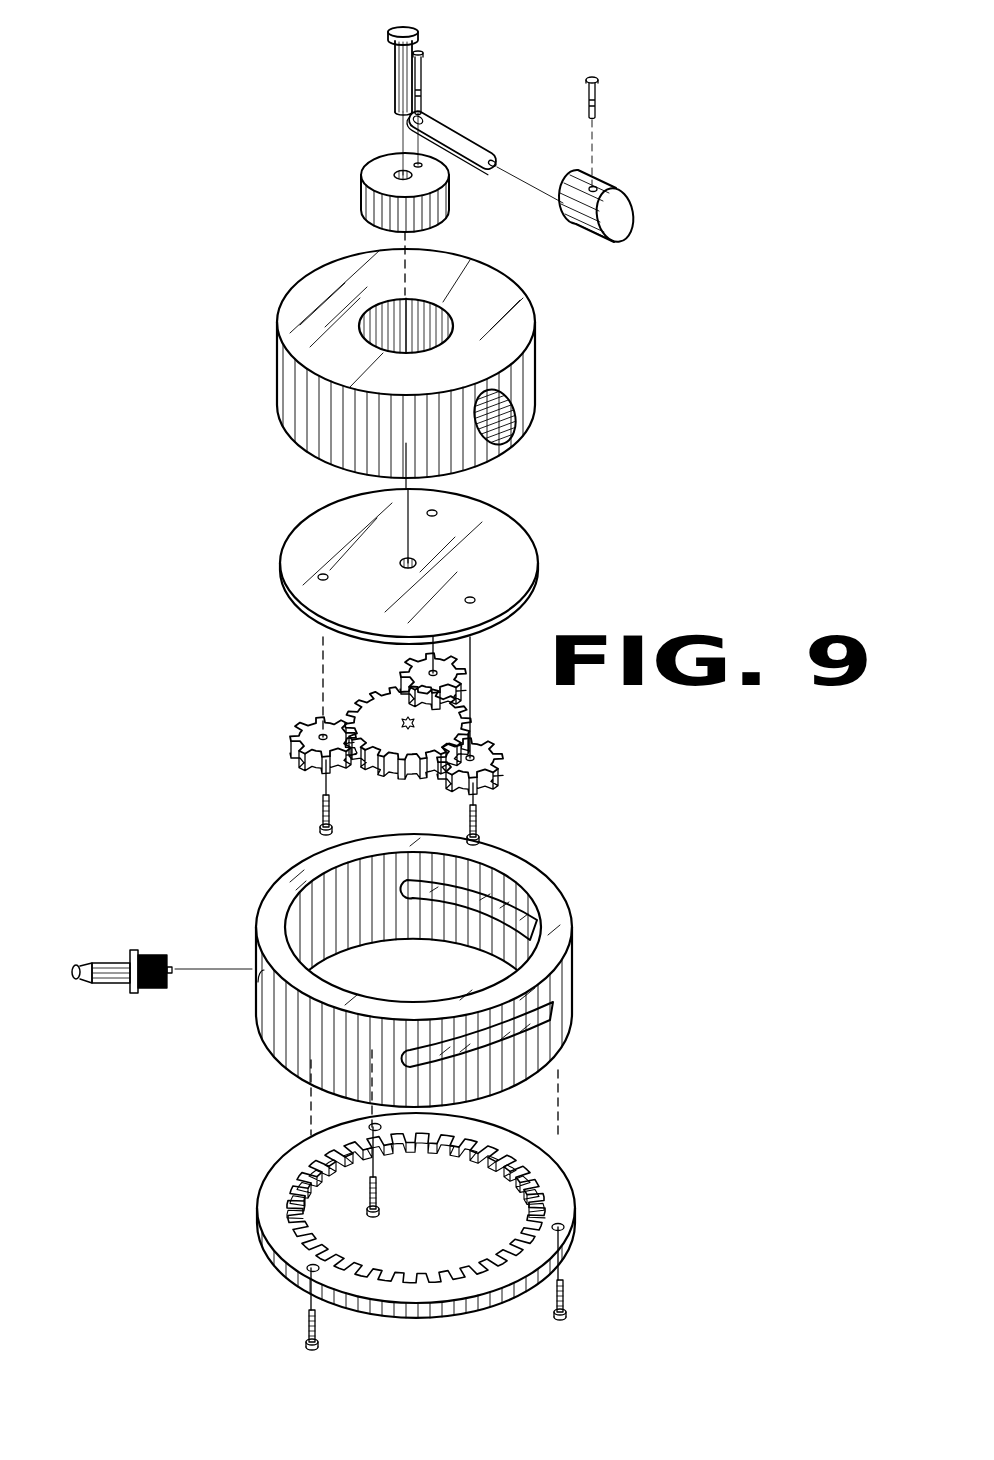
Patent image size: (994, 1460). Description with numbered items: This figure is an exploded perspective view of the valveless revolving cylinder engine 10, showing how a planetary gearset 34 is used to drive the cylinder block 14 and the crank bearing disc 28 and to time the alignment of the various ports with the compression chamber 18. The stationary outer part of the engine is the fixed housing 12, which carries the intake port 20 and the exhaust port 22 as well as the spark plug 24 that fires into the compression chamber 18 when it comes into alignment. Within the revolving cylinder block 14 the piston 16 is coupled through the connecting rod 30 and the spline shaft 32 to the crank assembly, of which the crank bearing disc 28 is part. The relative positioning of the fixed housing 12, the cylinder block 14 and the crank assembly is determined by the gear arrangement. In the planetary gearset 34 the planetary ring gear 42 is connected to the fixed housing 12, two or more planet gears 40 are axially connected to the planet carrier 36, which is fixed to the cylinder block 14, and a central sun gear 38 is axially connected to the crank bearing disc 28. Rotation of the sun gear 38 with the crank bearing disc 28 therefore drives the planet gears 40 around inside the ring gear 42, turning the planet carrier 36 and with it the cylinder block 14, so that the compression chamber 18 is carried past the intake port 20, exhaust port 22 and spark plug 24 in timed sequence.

The valveless revolving cylinder engine 10 is at (232, 165).
The fixed housing 12 is at (320, 863).
The cylinder block 14 is at (290, 307).
The piston 16 is at (617, 222).
The compression chamber 18 is at (503, 422).
The intake port 20 is at (463, 1055).
The exhaust port 22 is at (462, 895).
The spark plug 24 is at (110, 965).
The crank bearing disc 28 is at (377, 178).
The connecting rod 30 is at (467, 145).
The spline shaft 32 is at (400, 75).
The planetary gearset 34 is at (367, 718).
The planet carrier 36 is at (296, 547).
The sun gear 38 is at (447, 727).
The planet gear 40 is at (337, 740).
The planetary ring gear 42 is at (473, 820).